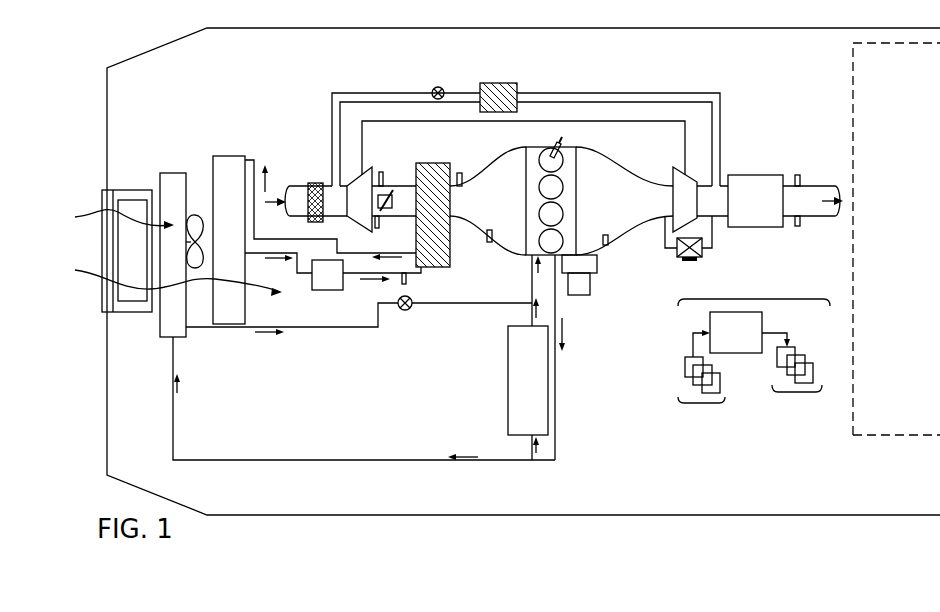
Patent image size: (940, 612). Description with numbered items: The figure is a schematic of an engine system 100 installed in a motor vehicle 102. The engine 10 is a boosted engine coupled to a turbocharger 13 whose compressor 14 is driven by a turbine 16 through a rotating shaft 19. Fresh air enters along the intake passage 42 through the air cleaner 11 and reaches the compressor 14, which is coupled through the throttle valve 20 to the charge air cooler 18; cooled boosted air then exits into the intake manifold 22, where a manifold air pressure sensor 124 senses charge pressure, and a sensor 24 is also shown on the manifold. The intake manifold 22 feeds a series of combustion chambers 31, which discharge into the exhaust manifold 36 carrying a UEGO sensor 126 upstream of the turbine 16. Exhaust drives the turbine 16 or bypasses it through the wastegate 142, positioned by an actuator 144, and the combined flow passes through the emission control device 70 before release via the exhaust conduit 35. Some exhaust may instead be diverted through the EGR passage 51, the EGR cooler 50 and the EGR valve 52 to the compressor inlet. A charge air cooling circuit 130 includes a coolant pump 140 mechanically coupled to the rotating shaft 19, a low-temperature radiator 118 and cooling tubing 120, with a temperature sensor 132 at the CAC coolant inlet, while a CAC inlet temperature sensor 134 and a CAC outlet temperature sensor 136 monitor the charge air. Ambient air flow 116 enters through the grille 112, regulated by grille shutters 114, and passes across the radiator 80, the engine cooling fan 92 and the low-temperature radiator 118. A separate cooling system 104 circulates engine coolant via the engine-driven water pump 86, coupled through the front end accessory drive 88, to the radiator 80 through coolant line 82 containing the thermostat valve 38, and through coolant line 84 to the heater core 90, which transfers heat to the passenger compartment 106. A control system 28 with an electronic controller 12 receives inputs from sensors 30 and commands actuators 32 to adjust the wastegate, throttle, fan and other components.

The engine system 100 is at (780, 63).
The motor vehicle 102 is at (507, 28).
The cooling system 104 is at (588, 404).
The passenger compartment 106 is at (896, 239).
The engine 10 is at (576, 193).
The air cleaner 11 is at (316, 184).
The controller 12 is at (743, 339).
The turbocharger 13 is at (374, 145).
The compressor 14 is at (365, 207).
The turbine 16 is at (692, 207).
The charge air cooler 18 is at (428, 163).
The rotating shaft 19 is at (623, 121).
The throttle valve 20 is at (399, 193).
The intake manifold 22 is at (509, 208).
The manifold pressure sensor 24 is at (487, 233).
The control system 28 is at (754, 299).
The sensors 30 is at (701, 403).
The combustion chambers 31 is at (560, 159).
The actuators 32 is at (797, 392).
The exhaust conduit 35 is at (825, 187).
The exhaust manifold 36 is at (619, 208).
The thermostat valve 38 is at (409, 310).
The intake passage 42 is at (305, 218).
The EGR cooler 50 is at (502, 83).
The EGR passage 51 is at (572, 93).
The EGR valve 52 is at (443, 89).
The emission control device 70 is at (744, 175).
The radiator 80 is at (180, 264).
The coolant line 82 is at (478, 302).
The coolant line 84 is at (532, 323).
The engine-driven water pump 86 is at (590, 290).
The front end accessory drive 88 is at (597, 263).
The heater core 90 is at (535, 388).
The engine cooling fan 92 is at (197, 215).
The grille 112 is at (101, 303).
The grille shutters 114 is at (143, 259).
The ambient air flow 116 is at (79, 216).
The low-temperature radiator 118 is at (241, 245).
The cooling tubing 120 is at (254, 162).
The manifold air pressure sensor 124 is at (378, 229).
The UEGO sensor 126 is at (608, 243).
The charge air cooling circuit 130 is at (250, 122).
The temperature sensor 132 is at (407, 281).
The CAC inlet temperature sensor 134 is at (382, 173).
The CAC outlet temperature sensor 136 is at (460, 173).
The coolant pump 140 is at (338, 281).
The wastegate 142 is at (702, 255).
The actuator 144 is at (684, 262).